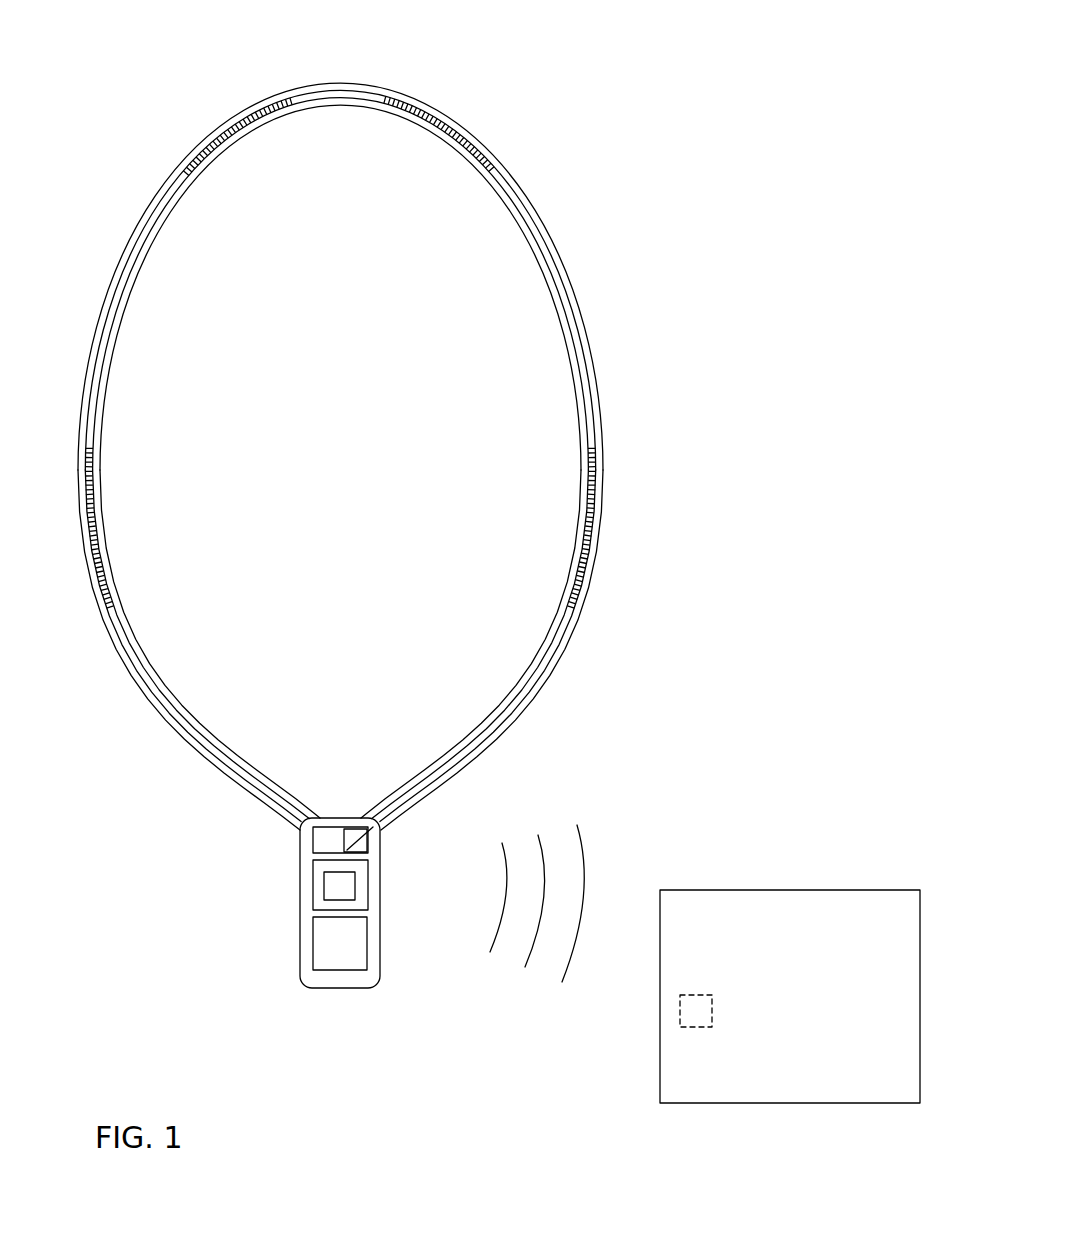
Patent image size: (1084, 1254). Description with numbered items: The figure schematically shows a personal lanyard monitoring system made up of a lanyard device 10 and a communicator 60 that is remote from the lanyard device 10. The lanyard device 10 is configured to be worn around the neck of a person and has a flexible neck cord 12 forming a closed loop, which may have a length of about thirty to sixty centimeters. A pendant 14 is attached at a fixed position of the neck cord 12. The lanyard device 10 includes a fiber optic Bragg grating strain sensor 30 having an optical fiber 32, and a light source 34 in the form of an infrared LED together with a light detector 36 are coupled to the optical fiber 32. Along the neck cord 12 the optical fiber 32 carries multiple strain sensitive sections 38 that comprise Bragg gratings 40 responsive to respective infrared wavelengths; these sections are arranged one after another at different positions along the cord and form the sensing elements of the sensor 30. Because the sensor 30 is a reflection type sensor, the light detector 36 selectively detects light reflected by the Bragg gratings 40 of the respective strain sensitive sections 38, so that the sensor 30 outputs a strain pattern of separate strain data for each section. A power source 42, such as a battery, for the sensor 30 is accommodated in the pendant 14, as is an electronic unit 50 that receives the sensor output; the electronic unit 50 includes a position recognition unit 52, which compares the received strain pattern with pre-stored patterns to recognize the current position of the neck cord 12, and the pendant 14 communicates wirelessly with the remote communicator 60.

The lanyard device 10 is at (666, 222).
The flexible neck cord 12 is at (593, 360).
The pendant 14 is at (380, 960).
The fiber optic Bragg grating strain sensor 30 is at (313, 845).
The optical fiber 32 is at (553, 648).
The light source 34 is at (353, 830).
The light detector 36 is at (363, 840).
The strain sensitive sections 38 is at (262, 82).
The Bragg gratings 40 is at (215, 130).
The power source 42 is at (313, 952).
The electronic unit 50 is at (313, 893).
The position recognition unit 52 is at (355, 882).
The communicator 60 is at (726, 826).